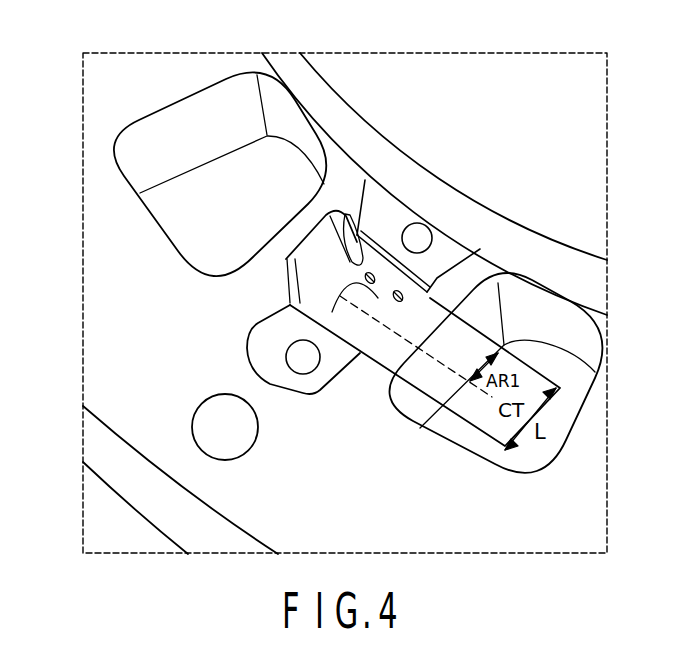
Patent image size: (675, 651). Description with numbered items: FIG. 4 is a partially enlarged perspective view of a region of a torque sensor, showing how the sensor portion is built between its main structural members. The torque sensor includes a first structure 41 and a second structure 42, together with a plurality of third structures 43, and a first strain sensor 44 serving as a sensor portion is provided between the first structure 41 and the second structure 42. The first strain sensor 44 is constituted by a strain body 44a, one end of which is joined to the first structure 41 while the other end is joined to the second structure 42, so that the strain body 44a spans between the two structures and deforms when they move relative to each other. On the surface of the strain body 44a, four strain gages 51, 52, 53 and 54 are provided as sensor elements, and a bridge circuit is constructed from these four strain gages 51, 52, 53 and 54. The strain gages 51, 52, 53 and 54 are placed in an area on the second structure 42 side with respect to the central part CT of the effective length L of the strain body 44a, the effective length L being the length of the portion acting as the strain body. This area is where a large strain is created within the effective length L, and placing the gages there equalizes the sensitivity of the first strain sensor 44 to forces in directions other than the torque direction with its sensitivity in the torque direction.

The first structure 41 is at (137, 388).
The second structure 42 is at (590, 285).
The third structure 43 is at (174, 127).
The first strain sensor 44 is at (392, 337).
The strain body 44a is at (337, 318).
The strain gage 51 is at (382, 222).
The strain gage 52 is at (348, 218).
The strain gage 53 is at (421, 231).
The strain gage 54 is at (498, 272).